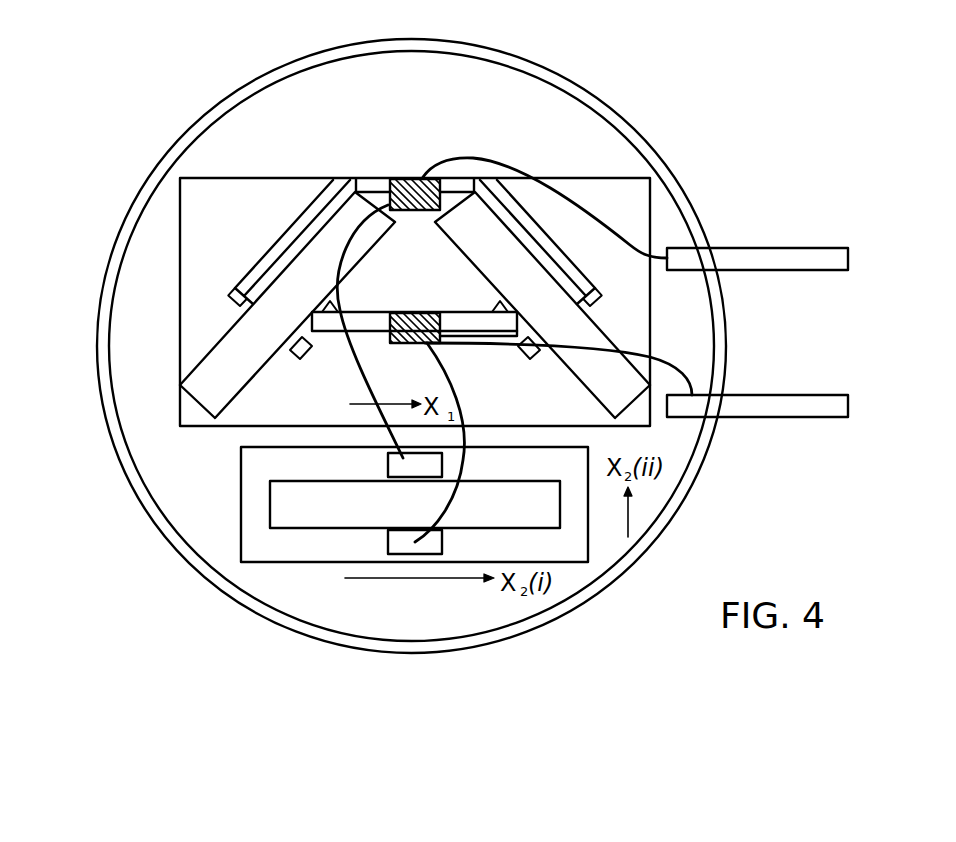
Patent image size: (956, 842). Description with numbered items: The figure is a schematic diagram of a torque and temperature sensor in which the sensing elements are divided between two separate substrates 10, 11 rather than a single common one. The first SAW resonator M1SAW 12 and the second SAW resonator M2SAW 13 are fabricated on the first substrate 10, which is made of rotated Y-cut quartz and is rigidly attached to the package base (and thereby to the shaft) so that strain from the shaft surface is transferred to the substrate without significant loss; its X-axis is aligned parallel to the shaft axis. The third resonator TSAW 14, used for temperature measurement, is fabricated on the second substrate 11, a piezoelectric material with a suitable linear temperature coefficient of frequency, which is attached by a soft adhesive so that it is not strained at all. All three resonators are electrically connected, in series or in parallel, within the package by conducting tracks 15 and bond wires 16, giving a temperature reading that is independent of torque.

The first substrate 10 is at (197, 285).
The second substrate 11 is at (258, 553).
The first SAW resonator M1SAW 12 is at (282, 297).
The second SAW resonator M2SAW 13 is at (590, 361).
The third resonator TSAW 14 is at (355, 508).
The conducting tracks 15 is at (560, 274).
The bond wires 16 is at (650, 356).